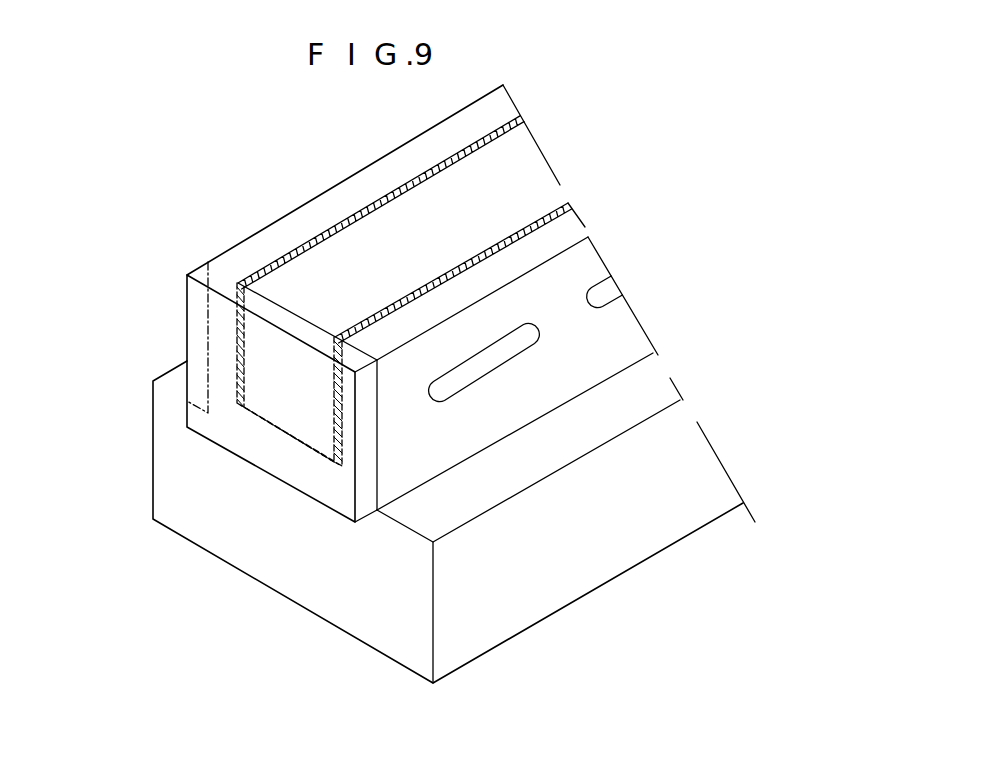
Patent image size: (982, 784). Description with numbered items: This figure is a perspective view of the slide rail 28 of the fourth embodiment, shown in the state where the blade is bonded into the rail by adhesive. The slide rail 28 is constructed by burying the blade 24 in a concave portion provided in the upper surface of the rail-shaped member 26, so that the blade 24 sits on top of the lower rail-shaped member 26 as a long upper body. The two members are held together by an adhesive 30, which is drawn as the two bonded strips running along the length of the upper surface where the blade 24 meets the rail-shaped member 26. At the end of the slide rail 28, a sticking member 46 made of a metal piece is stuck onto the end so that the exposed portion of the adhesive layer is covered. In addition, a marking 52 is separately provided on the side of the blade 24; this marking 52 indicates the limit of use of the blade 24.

The blade 24 is at (516, 193).
The rail-shaped member 26 is at (191, 502).
The slide rail 28 is at (207, 566).
The adhesive 30 is at (353, 215).
The sticking member 46 is at (225, 284).
The marking 52 is at (498, 363).